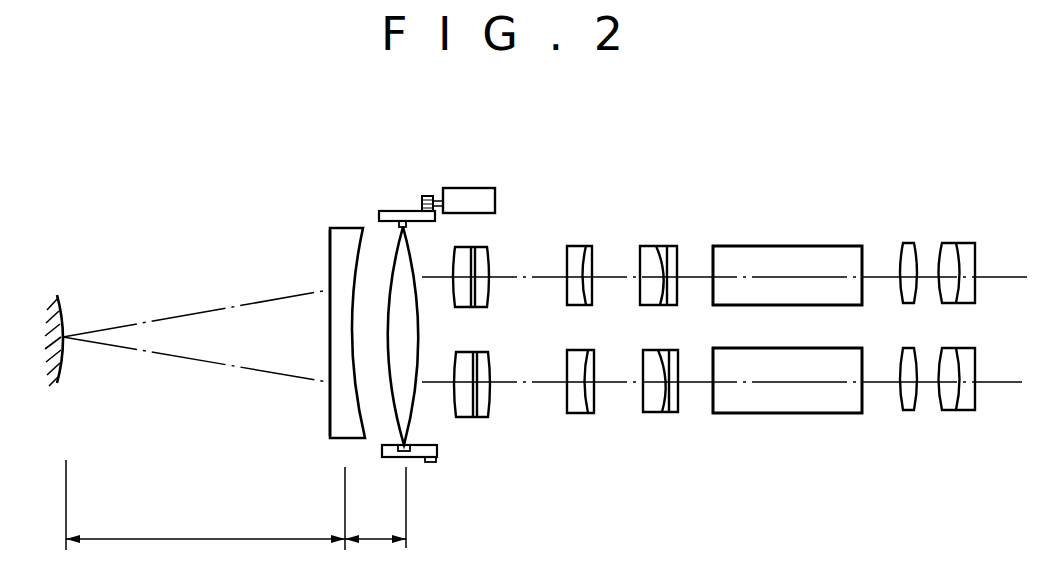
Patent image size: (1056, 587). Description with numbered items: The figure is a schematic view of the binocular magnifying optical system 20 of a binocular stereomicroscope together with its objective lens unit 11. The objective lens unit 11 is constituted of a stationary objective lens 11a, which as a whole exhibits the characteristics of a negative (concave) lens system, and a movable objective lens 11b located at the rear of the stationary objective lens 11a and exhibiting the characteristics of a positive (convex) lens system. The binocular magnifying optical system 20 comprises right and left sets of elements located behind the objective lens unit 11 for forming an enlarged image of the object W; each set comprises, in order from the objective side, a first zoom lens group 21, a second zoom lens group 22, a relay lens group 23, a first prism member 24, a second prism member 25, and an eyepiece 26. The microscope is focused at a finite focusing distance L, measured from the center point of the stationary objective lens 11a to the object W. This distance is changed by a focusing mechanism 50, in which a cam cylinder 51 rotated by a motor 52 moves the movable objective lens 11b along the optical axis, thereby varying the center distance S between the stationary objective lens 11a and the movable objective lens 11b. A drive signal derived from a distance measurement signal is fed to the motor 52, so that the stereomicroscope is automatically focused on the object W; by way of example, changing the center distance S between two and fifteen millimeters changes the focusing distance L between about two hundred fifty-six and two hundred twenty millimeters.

The object W is at (67, 309).
The objective lens unit 11 is at (323, 214).
The stationary objective lens 11a is at (335, 260).
The movable objective lens 11b is at (416, 409).
The focusing mechanism 50 is at (430, 281).
The cam cylinder 51 is at (391, 210).
The motor 52 is at (494, 189).
The binocular magnifying optical system 20 is at (740, 161).
The first zoom lens group 21 is at (483, 247).
The second zoom lens group 22 is at (584, 246).
The relay lens group 23 is at (660, 246).
The first prism member 24 is at (762, 246).
The second prism member 25 is at (787, 329).
The eyepiece 26 is at (895, 232).
The focusing distance L is at (205, 513).
The center distance S is at (375, 517).